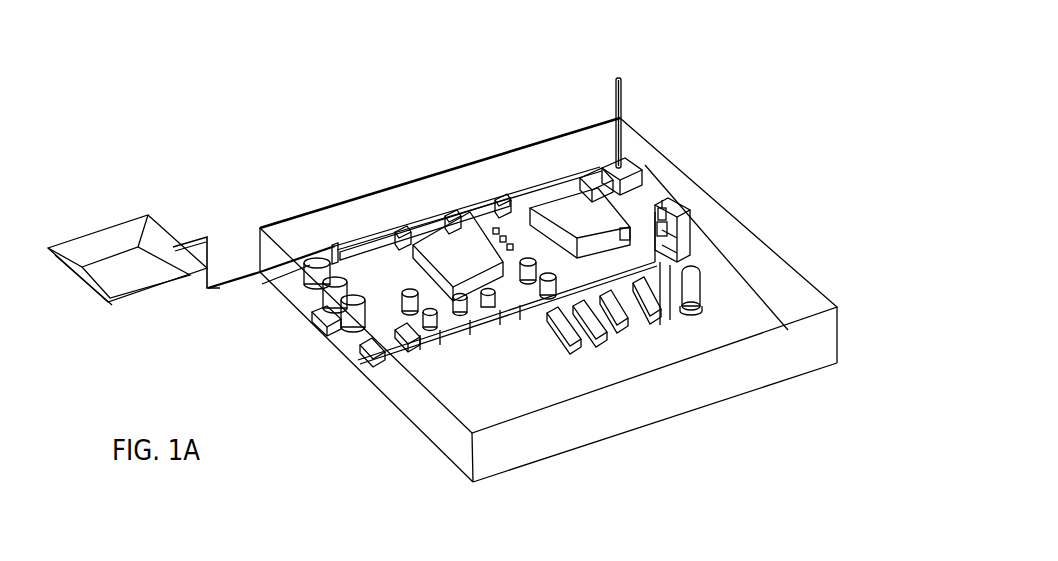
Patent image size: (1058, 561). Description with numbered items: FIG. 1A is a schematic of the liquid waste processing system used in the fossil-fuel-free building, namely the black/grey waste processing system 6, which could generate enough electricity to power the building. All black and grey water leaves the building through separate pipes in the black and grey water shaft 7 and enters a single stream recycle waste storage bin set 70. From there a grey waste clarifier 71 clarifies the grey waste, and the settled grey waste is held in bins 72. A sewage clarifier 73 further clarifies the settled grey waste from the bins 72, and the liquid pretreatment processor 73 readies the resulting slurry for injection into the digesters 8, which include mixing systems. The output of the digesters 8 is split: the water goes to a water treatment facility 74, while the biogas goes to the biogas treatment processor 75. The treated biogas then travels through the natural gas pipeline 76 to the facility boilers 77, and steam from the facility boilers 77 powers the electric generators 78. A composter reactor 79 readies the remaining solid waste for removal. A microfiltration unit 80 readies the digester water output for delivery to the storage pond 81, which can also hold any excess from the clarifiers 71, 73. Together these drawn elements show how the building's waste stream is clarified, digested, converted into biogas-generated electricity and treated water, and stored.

The black/grey waste processing system 6 is at (832, 281).
The black and grey water shaft 7 is at (669, 86).
The digesters 8 is at (494, 339).
The single stream recycle waste storage bin set 70 is at (670, 132).
The grey waste clarifier 71 is at (526, 175).
The bins 72 is at (417, 206).
The sewage clarifier 73 is at (391, 194).
The water treatment facility 74 is at (268, 300).
The biogas treatment processor 75 is at (331, 343).
The natural gas pipeline 76 is at (431, 393).
The facility boilers 77 is at (576, 364).
The electric generators 78 is at (716, 310).
The composter reactor 79 is at (753, 256).
The microfiltration unit 80 is at (688, 184).
The storage pond 81 is at (191, 239).